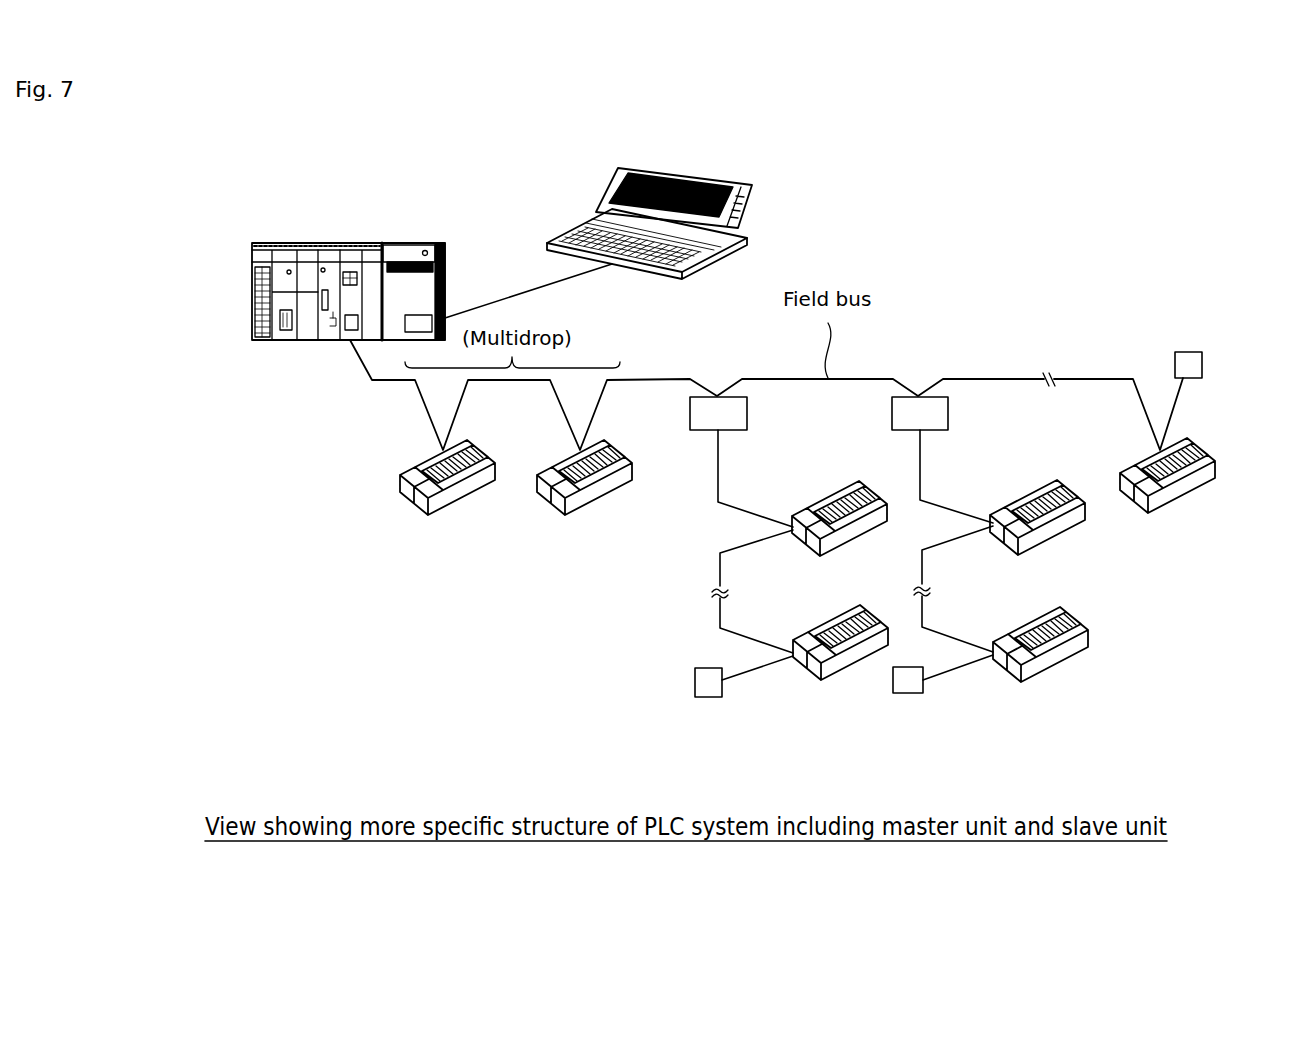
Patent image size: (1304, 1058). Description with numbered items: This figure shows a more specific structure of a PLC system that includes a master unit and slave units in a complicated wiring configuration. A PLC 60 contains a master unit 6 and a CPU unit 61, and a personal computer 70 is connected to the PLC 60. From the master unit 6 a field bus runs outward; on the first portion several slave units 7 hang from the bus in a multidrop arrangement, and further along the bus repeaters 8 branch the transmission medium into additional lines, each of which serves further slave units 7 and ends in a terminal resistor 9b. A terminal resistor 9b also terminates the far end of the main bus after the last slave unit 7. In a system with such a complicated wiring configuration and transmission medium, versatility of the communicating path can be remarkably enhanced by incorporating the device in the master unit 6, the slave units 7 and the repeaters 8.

The PLC 60 is at (378, 189).
The master unit 6 is at (331, 256).
The CPU unit 61 is at (413, 244).
The personal computer 70 is at (746, 169).
The repeater 8 is at (747, 413).
The terminal resistor 9b is at (695, 683).
The slave unit 7 is at (807, 576).